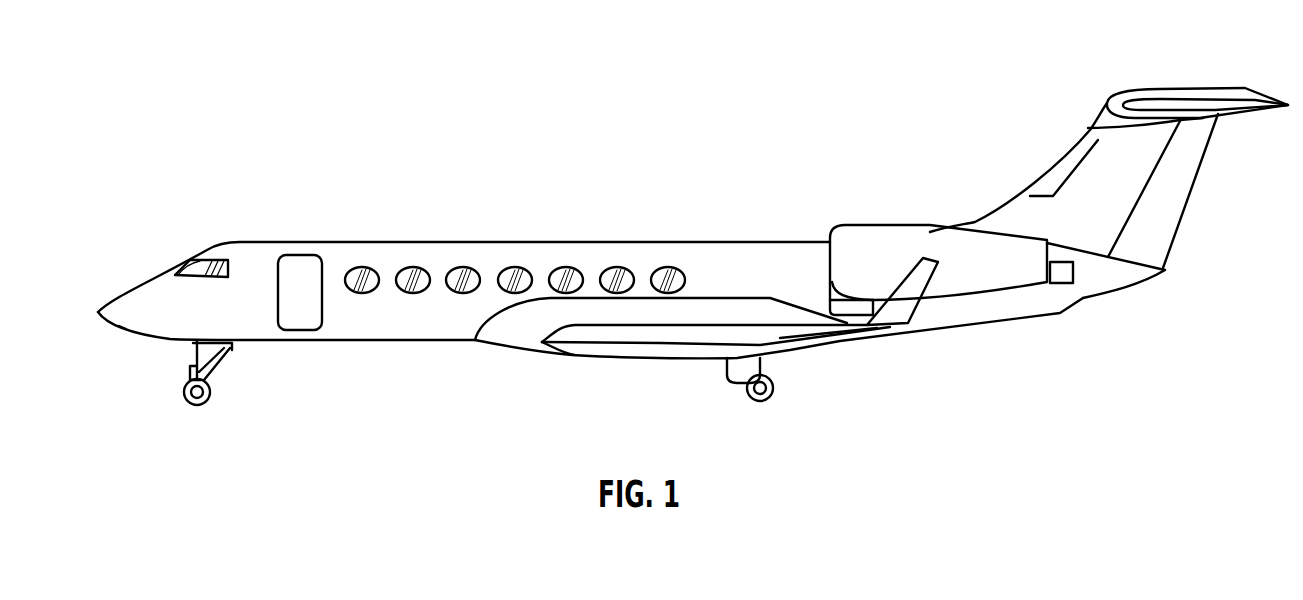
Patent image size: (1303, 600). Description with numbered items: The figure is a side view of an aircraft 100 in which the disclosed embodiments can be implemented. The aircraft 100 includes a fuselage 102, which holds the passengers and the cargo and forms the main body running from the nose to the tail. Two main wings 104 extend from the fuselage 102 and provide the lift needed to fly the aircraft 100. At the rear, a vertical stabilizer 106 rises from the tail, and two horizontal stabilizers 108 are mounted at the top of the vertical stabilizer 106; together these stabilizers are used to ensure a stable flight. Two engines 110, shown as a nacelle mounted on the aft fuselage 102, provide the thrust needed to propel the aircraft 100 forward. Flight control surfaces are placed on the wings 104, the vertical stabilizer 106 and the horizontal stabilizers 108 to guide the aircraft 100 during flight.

The aircraft 100 is at (196, 195).
The fuselage 102 is at (438, 242).
The main wings 104 is at (895, 313).
The vertical stabilizer 106 is at (1190, 193).
The horizontal stabilizers 108 is at (1230, 103).
The engines 110 is at (1000, 293).